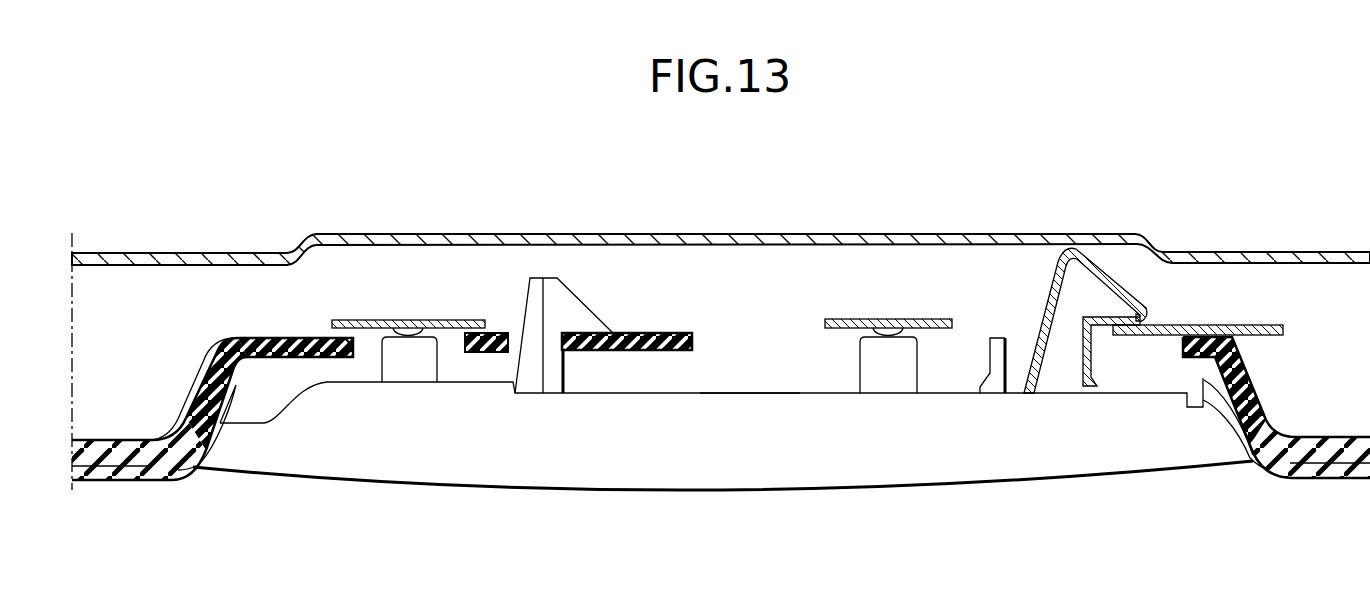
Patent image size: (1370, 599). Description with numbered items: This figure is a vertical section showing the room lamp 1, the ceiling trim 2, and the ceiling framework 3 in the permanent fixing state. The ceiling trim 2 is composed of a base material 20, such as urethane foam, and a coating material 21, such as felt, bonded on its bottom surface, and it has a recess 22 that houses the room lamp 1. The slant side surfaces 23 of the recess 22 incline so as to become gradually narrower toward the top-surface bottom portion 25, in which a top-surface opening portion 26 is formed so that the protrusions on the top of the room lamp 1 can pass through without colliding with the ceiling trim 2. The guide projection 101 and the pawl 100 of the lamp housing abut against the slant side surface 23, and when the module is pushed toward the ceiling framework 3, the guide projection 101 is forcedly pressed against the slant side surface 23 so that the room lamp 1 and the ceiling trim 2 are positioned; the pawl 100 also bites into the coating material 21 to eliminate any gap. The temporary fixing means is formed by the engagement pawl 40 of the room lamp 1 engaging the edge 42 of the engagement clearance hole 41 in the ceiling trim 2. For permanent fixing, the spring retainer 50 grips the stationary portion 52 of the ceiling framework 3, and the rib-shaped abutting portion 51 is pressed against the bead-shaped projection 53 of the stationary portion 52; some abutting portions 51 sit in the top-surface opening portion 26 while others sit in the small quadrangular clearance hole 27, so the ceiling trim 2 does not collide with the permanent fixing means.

The room lamp 1 is at (792, 491).
The ceiling trim 2 is at (112, 483).
The ceiling framework 3 is at (172, 241).
The base material 20 is at (1309, 442).
The coating material 21 is at (1327, 474).
The recess 22 is at (259, 362).
The slant side surface 23 is at (224, 348).
The top-surface bottom portion 25 is at (693, 348).
The top-surface opening portion 26 is at (745, 337).
The clearance hole 27 is at (362, 347).
The engagement pawl 40 is at (576, 313).
The engagement clearance hole 41 is at (513, 340).
The edge 42 is at (560, 394).
The spring retainer 50 is at (1042, 300).
The abutting portion 51 is at (410, 374).
The stationary portion 52 is at (372, 321).
The projection 53 is at (415, 329).
The pawl 100 is at (183, 470).
The guide projection 101 is at (227, 414).